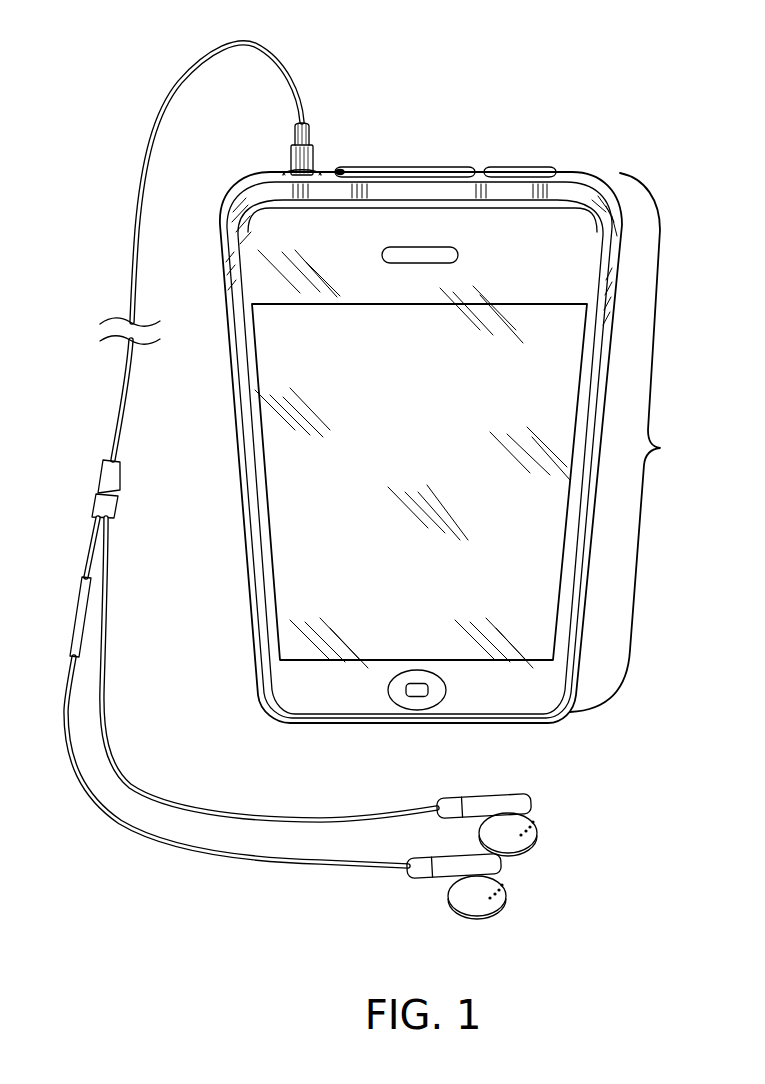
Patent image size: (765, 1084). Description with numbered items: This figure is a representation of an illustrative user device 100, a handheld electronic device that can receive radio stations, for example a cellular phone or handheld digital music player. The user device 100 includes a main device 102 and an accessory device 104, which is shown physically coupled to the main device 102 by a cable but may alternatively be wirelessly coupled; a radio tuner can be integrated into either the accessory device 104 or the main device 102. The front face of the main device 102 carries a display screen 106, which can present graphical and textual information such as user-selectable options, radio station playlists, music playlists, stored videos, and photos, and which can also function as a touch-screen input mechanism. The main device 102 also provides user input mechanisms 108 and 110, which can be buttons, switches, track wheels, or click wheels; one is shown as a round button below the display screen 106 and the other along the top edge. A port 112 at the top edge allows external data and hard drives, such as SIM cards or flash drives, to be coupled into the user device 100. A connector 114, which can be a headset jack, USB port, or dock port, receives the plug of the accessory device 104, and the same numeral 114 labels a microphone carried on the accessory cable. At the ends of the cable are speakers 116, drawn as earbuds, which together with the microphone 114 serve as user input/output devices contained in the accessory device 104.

The user device 100 is at (621, 35).
The main device 102 is at (460, 447).
The accessory device 104 is at (198, 62).
The display screen 106 is at (397, 455).
The user input mechanism 108 is at (407, 706).
The user input mechanism 110 is at (520, 172).
The port 112 is at (413, 173).
The connector 114 is at (289, 173).
The speakers 116 is at (540, 836).